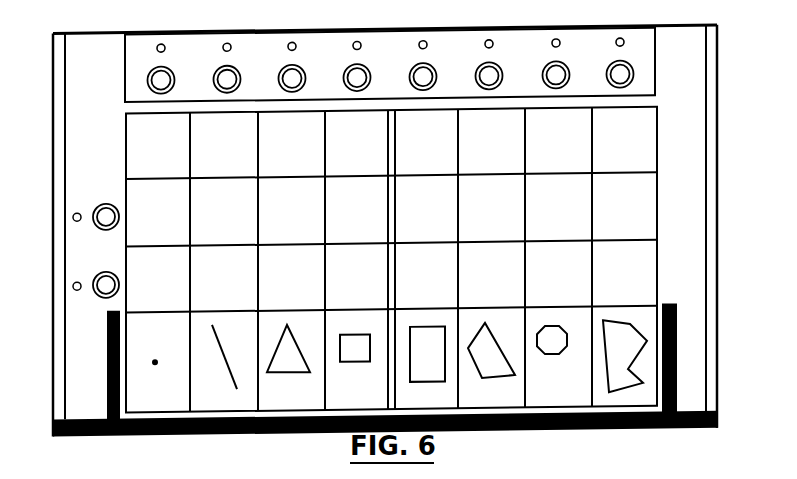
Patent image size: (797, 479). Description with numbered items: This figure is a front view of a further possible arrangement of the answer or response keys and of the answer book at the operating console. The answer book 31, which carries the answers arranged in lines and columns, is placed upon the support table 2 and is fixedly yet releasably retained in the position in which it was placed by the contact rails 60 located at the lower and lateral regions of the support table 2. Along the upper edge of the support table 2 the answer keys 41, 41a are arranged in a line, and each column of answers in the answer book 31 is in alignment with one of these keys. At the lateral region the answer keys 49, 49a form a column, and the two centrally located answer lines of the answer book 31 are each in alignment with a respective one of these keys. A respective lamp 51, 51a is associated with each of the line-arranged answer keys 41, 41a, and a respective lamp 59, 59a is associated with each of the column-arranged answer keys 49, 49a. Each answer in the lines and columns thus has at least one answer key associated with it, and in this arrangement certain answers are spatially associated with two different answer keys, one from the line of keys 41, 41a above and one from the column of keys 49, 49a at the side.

The support table 2 is at (50, 232).
The answer book 31 is at (640, 216).
The answer key 41 is at (225, 78).
The answer key 41a is at (424, 79).
The answer key 49 is at (106, 274).
The answer key 49a is at (106, 207).
The lamp 51 is at (289, 48).
The lamp 51a is at (419, 46).
The lamp 59 is at (77, 287).
The lamp 59a is at (77, 208).
The contact rails 60 is at (107, 360).